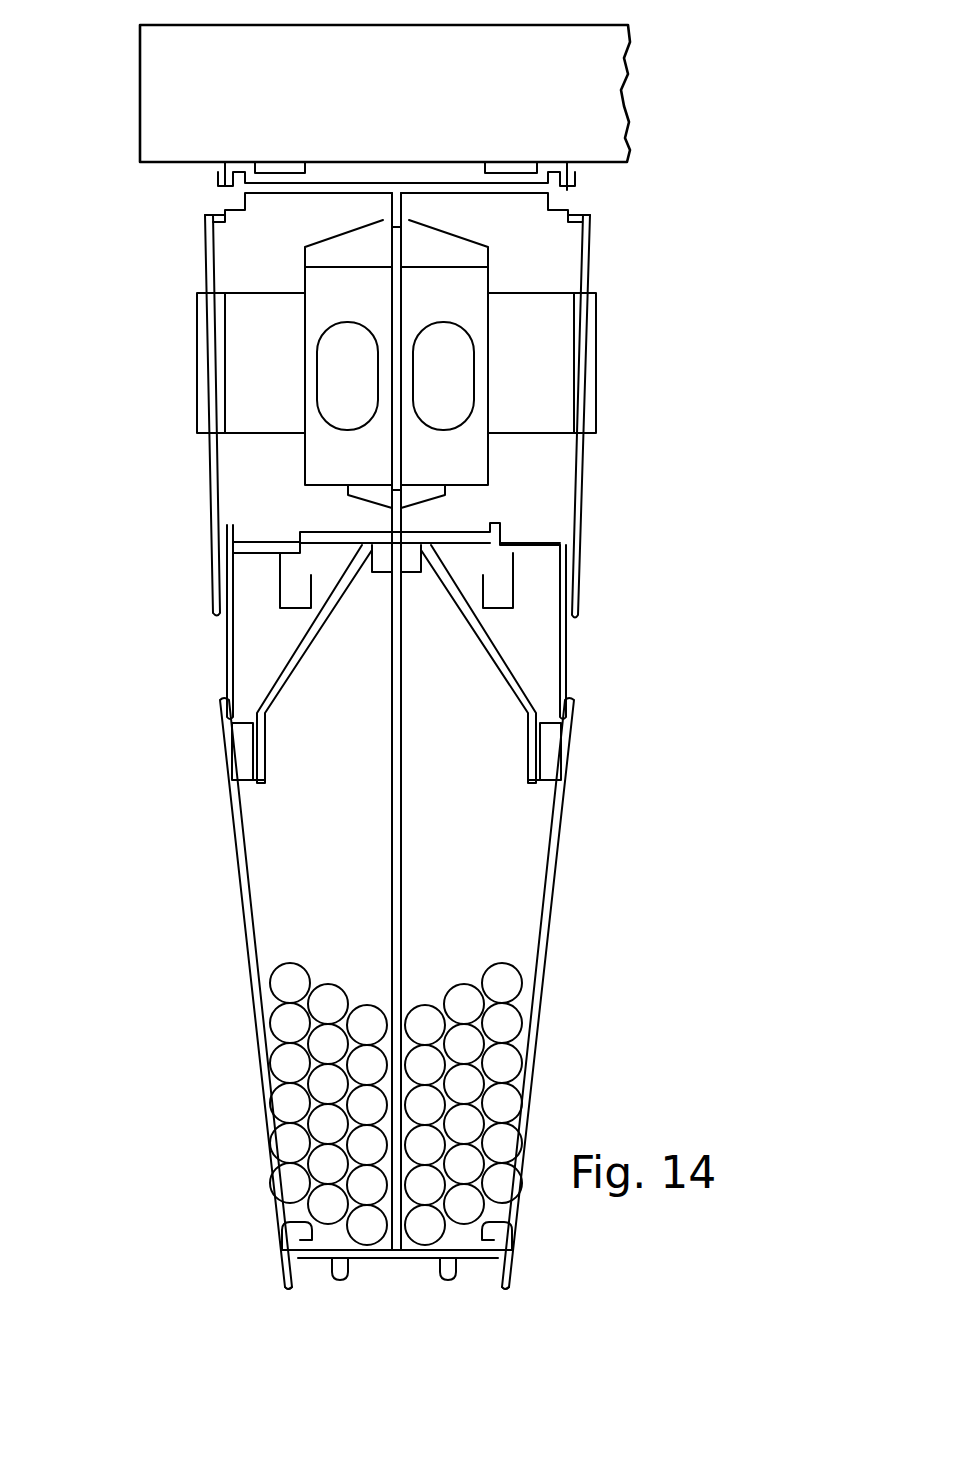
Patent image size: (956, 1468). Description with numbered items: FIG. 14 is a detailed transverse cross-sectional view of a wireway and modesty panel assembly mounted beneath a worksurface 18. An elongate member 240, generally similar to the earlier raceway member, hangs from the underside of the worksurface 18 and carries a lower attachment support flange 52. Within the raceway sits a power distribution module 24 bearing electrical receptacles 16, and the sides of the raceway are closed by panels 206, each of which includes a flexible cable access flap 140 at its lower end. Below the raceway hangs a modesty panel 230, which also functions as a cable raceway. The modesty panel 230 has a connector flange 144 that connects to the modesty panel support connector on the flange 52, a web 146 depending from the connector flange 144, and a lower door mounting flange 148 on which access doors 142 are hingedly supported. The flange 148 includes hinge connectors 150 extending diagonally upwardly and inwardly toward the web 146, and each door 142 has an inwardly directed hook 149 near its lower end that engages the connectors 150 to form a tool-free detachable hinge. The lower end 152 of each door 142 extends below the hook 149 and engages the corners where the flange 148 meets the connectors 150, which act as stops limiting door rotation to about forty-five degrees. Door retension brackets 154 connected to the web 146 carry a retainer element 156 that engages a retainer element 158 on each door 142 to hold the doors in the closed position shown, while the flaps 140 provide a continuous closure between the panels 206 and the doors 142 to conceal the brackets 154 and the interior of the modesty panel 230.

The worksurface 18 is at (540, 40).
The elongate member 240 is at (283, 196).
The panels 206 is at (214, 465).
The electrical receptacles 16 is at (240, 348).
The power distribution module 24 is at (470, 296).
The web 146 is at (402, 792).
The lower attachment support flange 52 is at (345, 525).
The connector flange 144 is at (466, 540).
The door retension brackets 154 is at (332, 606).
The cable access flap 140 is at (228, 650).
The retainer element 158 is at (240, 757).
The retainer element 156 is at (258, 782).
The access doors 142 is at (238, 905).
The lower door mounting flange 148 is at (375, 1262).
The hook 149 is at (280, 1220).
The hinge connectors 150 is at (302, 1272).
The lower end 152 is at (286, 1285).
The modesty panel 230 is at (158, 828).